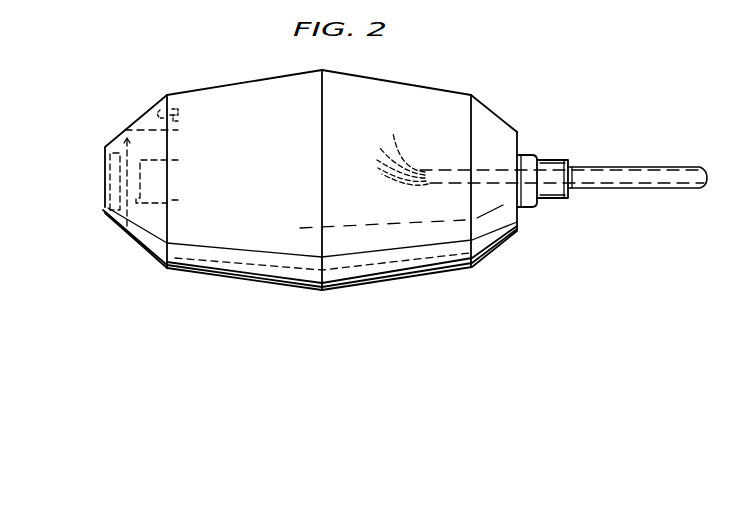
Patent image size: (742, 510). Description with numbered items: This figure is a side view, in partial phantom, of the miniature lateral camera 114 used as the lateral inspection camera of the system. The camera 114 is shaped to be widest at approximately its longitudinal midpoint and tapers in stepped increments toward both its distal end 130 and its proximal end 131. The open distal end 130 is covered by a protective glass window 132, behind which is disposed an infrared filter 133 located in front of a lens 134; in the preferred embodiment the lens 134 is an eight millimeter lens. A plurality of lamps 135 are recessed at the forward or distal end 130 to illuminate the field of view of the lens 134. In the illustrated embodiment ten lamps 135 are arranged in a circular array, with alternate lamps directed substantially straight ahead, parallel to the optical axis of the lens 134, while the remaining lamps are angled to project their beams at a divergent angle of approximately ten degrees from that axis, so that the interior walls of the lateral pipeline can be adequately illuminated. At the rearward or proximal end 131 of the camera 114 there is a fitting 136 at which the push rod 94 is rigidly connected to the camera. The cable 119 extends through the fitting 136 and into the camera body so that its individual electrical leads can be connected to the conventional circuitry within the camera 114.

The miniature lateral camera 114 is at (425, 70).
The distal end 130 is at (103, 212).
The proximal end 131 is at (518, 143).
The protective glass window 132 is at (105, 206).
The infrared filter 133 is at (127, 140).
The lens 134 is at (157, 203).
The lamps 135 is at (156, 100).
The fitting 136 is at (557, 160).
The push rod 94 is at (673, 167).
The cable 119 is at (642, 198).